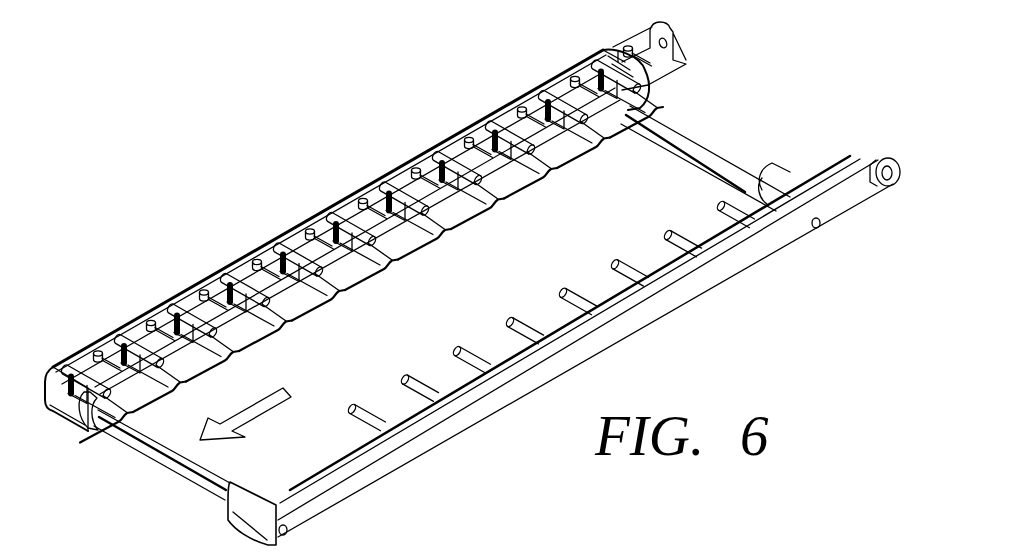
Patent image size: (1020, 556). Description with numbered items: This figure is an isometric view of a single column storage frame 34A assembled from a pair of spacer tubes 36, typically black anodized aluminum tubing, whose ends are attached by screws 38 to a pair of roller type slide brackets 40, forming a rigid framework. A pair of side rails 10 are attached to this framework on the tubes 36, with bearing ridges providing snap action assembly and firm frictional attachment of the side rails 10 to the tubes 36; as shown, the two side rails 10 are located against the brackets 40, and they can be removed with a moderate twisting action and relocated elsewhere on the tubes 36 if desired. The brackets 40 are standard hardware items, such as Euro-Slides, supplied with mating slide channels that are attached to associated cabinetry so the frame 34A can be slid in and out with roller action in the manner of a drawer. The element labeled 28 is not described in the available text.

The side rail 10 is at (466, 203).
The retaining clip 28 is at (93, 432).
The storage frame 34A is at (251, 99).
The spacer tube 36 is at (190, 472).
The screw 38 is at (816, 230).
The roller type slide bracket 40 is at (650, 58).